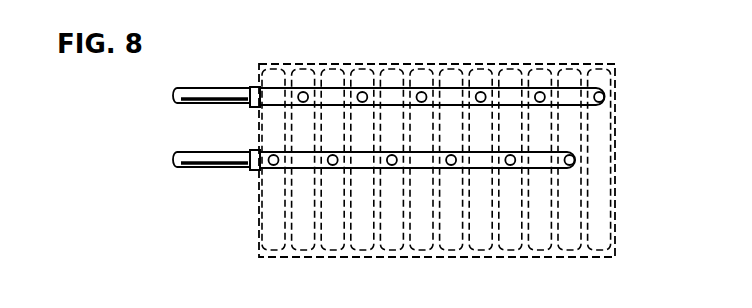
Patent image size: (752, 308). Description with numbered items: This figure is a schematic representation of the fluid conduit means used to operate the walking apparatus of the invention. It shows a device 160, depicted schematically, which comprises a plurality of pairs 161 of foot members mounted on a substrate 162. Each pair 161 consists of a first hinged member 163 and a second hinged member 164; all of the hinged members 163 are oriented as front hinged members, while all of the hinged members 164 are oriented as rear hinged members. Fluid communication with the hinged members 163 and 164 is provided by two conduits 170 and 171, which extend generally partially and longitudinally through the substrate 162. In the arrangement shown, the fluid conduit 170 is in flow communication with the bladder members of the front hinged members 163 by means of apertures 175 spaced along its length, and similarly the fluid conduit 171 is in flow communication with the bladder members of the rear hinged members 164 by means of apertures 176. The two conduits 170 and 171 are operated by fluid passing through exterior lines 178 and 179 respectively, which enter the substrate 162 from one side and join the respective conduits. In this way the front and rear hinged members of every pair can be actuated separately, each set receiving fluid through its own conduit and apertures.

The device 160 is at (413, 51).
The pairs of foot members 161 is at (307, 66).
The substrate 162 is at (600, 63).
The first hinged member 163 is at (298, 245).
The second hinged member 164 is at (278, 243).
The fluid conduit 170 is at (505, 88).
The fluid conduit 171 is at (279, 170).
The apertures 175 is at (306, 96).
The apertures 176 is at (333, 165).
The exterior line 178 is at (195, 90).
The exterior line 179 is at (198, 152).